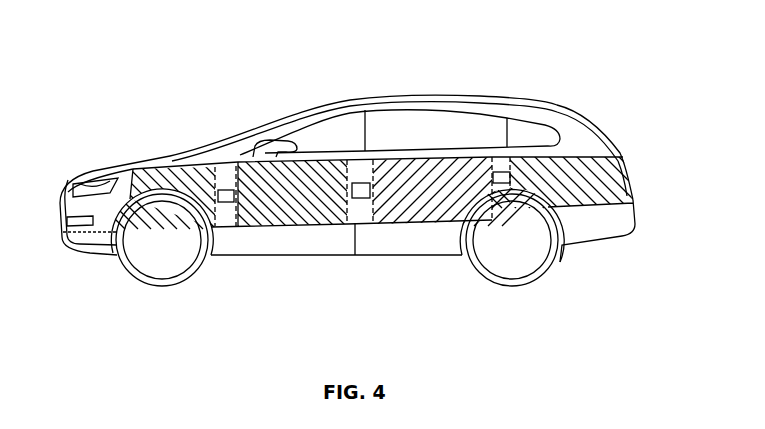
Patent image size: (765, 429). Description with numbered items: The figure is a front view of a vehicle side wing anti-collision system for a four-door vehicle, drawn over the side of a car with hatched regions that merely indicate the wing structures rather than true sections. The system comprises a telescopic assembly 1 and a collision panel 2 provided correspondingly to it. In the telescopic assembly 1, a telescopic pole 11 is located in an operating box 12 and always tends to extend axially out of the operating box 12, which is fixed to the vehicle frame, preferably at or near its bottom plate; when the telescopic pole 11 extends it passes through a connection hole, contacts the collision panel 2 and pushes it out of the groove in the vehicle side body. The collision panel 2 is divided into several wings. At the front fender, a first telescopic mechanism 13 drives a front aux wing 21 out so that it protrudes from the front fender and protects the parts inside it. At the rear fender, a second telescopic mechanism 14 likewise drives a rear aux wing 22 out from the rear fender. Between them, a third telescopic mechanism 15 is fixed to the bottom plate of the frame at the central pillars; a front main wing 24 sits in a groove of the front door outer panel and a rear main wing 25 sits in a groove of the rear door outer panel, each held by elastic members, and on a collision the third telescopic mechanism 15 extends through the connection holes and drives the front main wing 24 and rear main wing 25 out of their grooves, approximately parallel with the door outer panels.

The telescopic assembly 1 is at (225, 165).
The collision panel 2 is at (578, 213).
The telescopic pole 11 is at (357, 183).
The operating box 12 is at (363, 173).
The first telescopic mechanism 13 is at (240, 217).
The second telescopic mechanism 14 is at (512, 158).
The third telescopic mechanism 15 is at (345, 197).
The front aux wing 21 is at (160, 183).
The rear aux wing 22 is at (592, 182).
The front main wing 24 is at (310, 210).
The rear main wing 25 is at (392, 213).